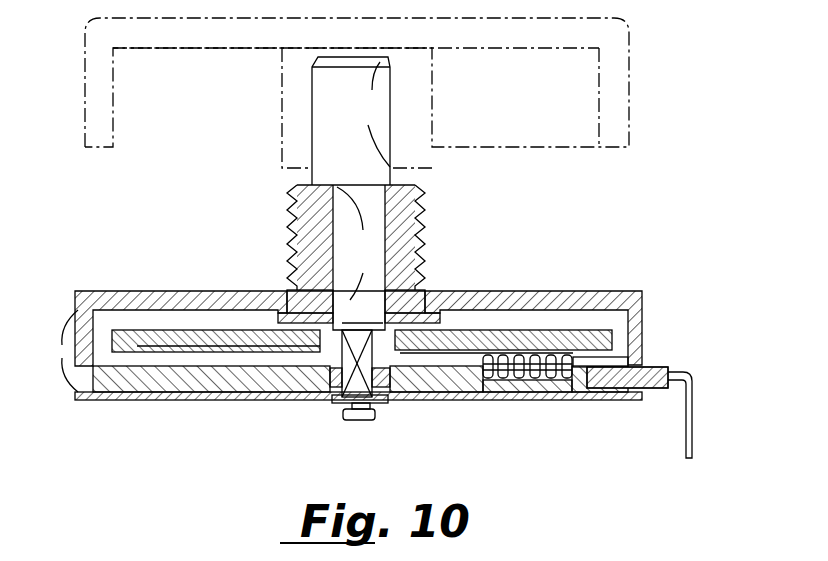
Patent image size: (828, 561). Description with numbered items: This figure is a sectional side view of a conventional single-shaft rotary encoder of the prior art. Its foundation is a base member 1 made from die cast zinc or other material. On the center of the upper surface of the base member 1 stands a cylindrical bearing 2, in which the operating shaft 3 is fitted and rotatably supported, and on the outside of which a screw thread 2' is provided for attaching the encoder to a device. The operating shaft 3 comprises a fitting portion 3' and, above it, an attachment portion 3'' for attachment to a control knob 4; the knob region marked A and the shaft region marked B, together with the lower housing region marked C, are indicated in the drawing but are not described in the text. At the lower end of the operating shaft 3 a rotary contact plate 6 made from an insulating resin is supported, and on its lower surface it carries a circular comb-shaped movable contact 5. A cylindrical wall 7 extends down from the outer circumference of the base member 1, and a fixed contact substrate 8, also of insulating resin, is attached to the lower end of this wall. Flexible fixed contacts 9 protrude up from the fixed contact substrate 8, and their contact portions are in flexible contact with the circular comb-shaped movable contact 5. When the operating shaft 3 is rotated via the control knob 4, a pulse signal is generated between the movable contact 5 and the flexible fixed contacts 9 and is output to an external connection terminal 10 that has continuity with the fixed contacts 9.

The base member 1 is at (583, 290).
The cylindrical bearing 2 is at (392, 253).
The screw thread 2' is at (392, 237).
The operating shaft 3 is at (275, 193).
The fitting portion 3' is at (290, 257).
The attachment portion 3'' is at (293, 127).
The control knob 4 is at (614, 75).
The circular comb-shaped movable contact 5 is at (590, 345).
The rotary contact plate 6 is at (163, 333).
The cylindrical wall 7 is at (638, 320).
The fixed contact substrate 8 is at (446, 400).
The flexible fixed contacts 9 is at (572, 360).
The external connection terminal 10 is at (690, 417).
The upper spindle region A is at (374, 114).
The lower spindle region B is at (350, 243).
The housing region C is at (64, 351).